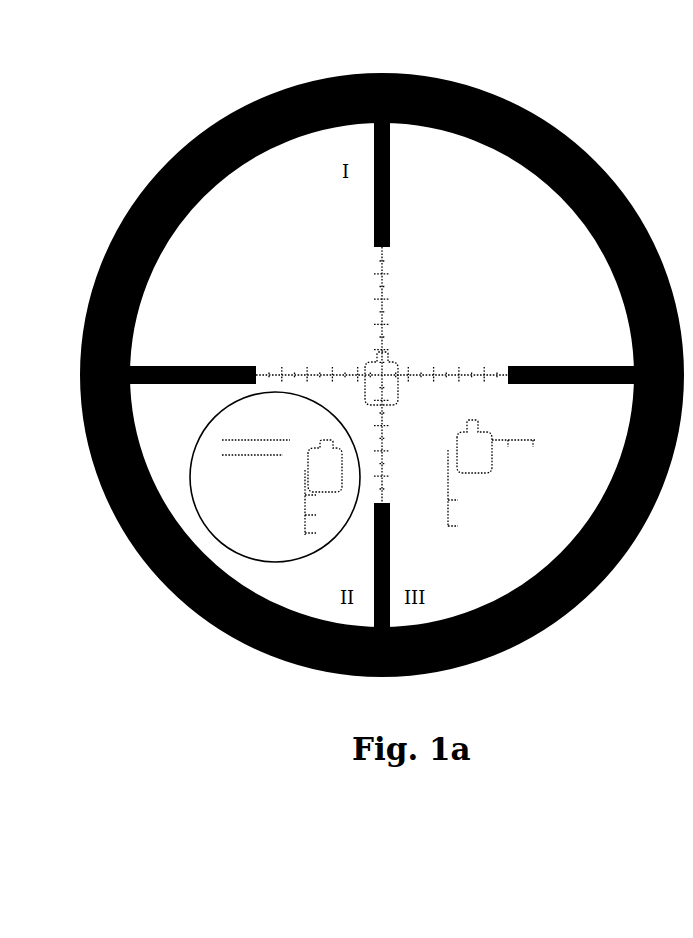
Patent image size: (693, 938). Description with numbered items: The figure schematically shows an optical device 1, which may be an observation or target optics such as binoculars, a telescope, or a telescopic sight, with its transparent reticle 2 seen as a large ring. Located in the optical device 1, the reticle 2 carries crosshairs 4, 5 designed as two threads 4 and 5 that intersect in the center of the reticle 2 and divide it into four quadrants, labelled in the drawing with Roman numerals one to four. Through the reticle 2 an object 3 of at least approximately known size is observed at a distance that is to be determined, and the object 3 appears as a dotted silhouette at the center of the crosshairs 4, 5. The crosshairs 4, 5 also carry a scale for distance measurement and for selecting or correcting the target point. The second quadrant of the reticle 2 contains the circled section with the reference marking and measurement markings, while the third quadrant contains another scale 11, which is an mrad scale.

The optical device 1 is at (505, 97).
The reticle 2 is at (527, 247).
The object 3 is at (388, 375).
The crosshair thread 4 is at (535, 365).
The crosshair thread 5 is at (373, 223).
The scale 11 is at (478, 488).